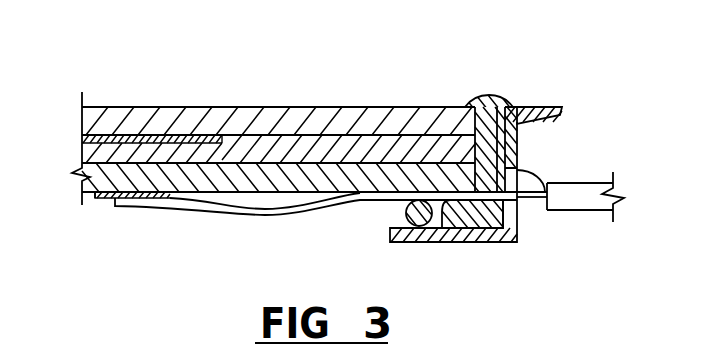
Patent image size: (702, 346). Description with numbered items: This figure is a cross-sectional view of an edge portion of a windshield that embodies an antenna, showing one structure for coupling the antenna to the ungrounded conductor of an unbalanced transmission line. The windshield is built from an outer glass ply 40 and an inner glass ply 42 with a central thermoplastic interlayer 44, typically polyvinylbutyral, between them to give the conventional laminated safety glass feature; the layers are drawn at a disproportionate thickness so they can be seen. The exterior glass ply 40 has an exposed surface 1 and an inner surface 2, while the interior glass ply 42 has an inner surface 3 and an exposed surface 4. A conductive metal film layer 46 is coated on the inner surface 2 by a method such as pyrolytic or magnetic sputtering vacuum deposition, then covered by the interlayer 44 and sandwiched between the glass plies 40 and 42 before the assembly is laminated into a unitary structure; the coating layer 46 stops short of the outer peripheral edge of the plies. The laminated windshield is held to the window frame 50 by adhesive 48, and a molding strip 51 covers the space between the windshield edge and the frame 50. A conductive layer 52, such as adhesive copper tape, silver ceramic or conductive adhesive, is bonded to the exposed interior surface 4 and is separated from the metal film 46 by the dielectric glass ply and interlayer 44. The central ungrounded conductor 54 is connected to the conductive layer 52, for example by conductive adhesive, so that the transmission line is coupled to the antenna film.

The exposed surface 1 is at (377, 107).
The inner surface 2 is at (302, 135).
The inner surface 3 is at (308, 165).
The exposed surface 4 is at (203, 192).
The outer glass ply 40 is at (220, 113).
The inner glass ply 42 is at (173, 205).
The thermoplastic interlayer 44 is at (218, 205).
The conductive metal film layer 46 is at (160, 135).
The adhesive 48 is at (518, 139).
The window frame 50 is at (525, 108).
The molding strip 51 is at (492, 95).
The conductive layer 52 is at (102, 202).
The central ungrounded conductor 54 is at (373, 200).